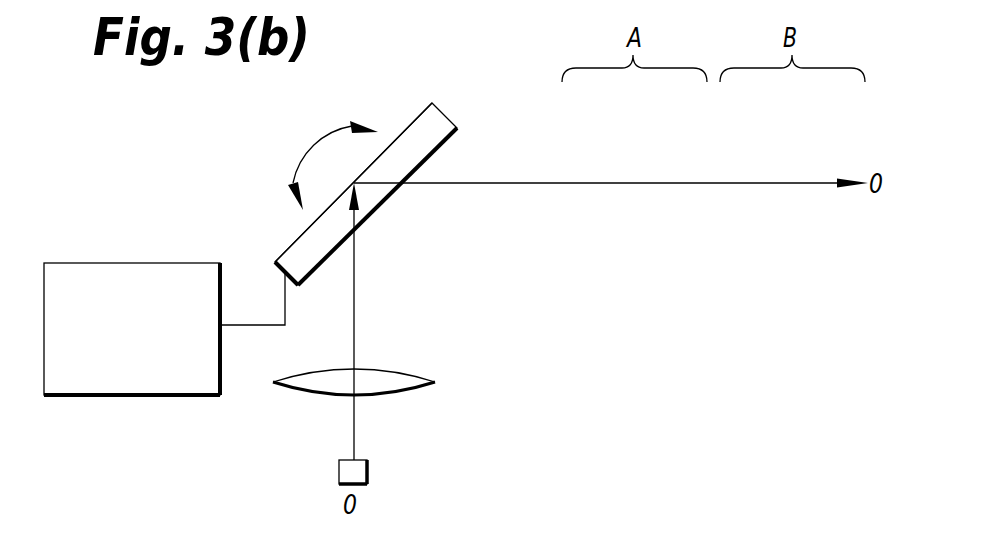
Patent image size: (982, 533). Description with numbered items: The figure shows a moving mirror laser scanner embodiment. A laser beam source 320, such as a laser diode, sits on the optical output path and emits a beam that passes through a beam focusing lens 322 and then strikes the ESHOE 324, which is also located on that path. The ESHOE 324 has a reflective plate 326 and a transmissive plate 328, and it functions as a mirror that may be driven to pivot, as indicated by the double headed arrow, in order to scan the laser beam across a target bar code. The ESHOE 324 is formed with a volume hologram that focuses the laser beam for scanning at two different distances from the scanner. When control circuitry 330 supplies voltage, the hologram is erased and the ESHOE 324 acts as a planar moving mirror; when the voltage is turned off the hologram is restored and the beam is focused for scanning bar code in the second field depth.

The laser beam source 320 is at (367, 472).
The beam focusing lens 322 is at (435, 382).
The ESHOE 324 is at (367, 170).
The reflective plate 326 is at (300, 230).
The transmissive plate 328 is at (380, 208).
The control circuitry 330 is at (132, 395).